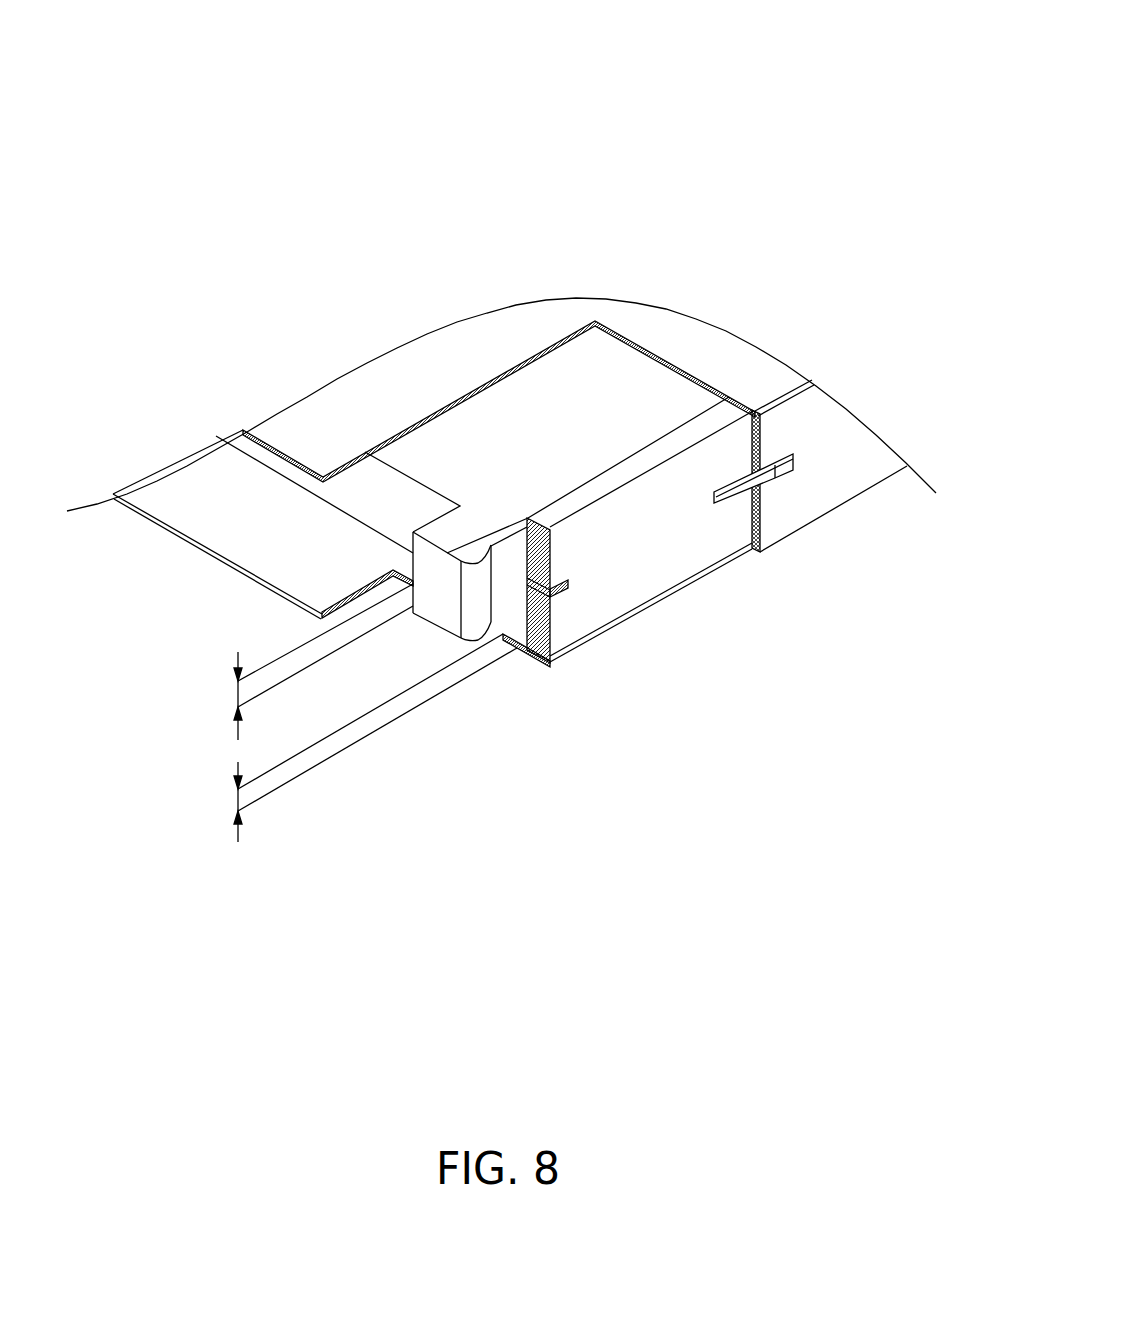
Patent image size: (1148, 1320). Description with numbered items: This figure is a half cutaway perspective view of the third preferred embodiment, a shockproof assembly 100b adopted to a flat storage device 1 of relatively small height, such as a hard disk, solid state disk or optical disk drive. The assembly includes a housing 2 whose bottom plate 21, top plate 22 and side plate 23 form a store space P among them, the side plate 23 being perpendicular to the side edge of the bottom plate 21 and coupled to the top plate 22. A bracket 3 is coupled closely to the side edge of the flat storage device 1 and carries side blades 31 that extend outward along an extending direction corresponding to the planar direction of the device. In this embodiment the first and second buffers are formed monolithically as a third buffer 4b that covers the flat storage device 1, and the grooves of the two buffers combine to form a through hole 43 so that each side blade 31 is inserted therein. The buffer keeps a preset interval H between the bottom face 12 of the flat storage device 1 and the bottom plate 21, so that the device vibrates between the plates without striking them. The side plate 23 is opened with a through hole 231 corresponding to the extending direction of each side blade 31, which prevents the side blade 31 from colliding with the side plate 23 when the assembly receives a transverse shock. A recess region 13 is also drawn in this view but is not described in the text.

The shockproof assembly 100b is at (750, 108).
The flat storage device 1 is at (237, 449).
The bottom face 12 is at (285, 488).
The recess 13 is at (445, 457).
The housing 2 is at (748, 346).
The bottom plate 21 is at (250, 557).
The top plate 22 is at (365, 425).
The side plate 23 is at (850, 490).
The through hole 231 is at (764, 488).
The bracket 3 is at (523, 588).
The side blade 31 is at (561, 592).
The through hole 43 is at (570, 587).
The third buffer 4b is at (703, 563).
The store space P is at (310, 567).
The preset interval H is at (238, 702).